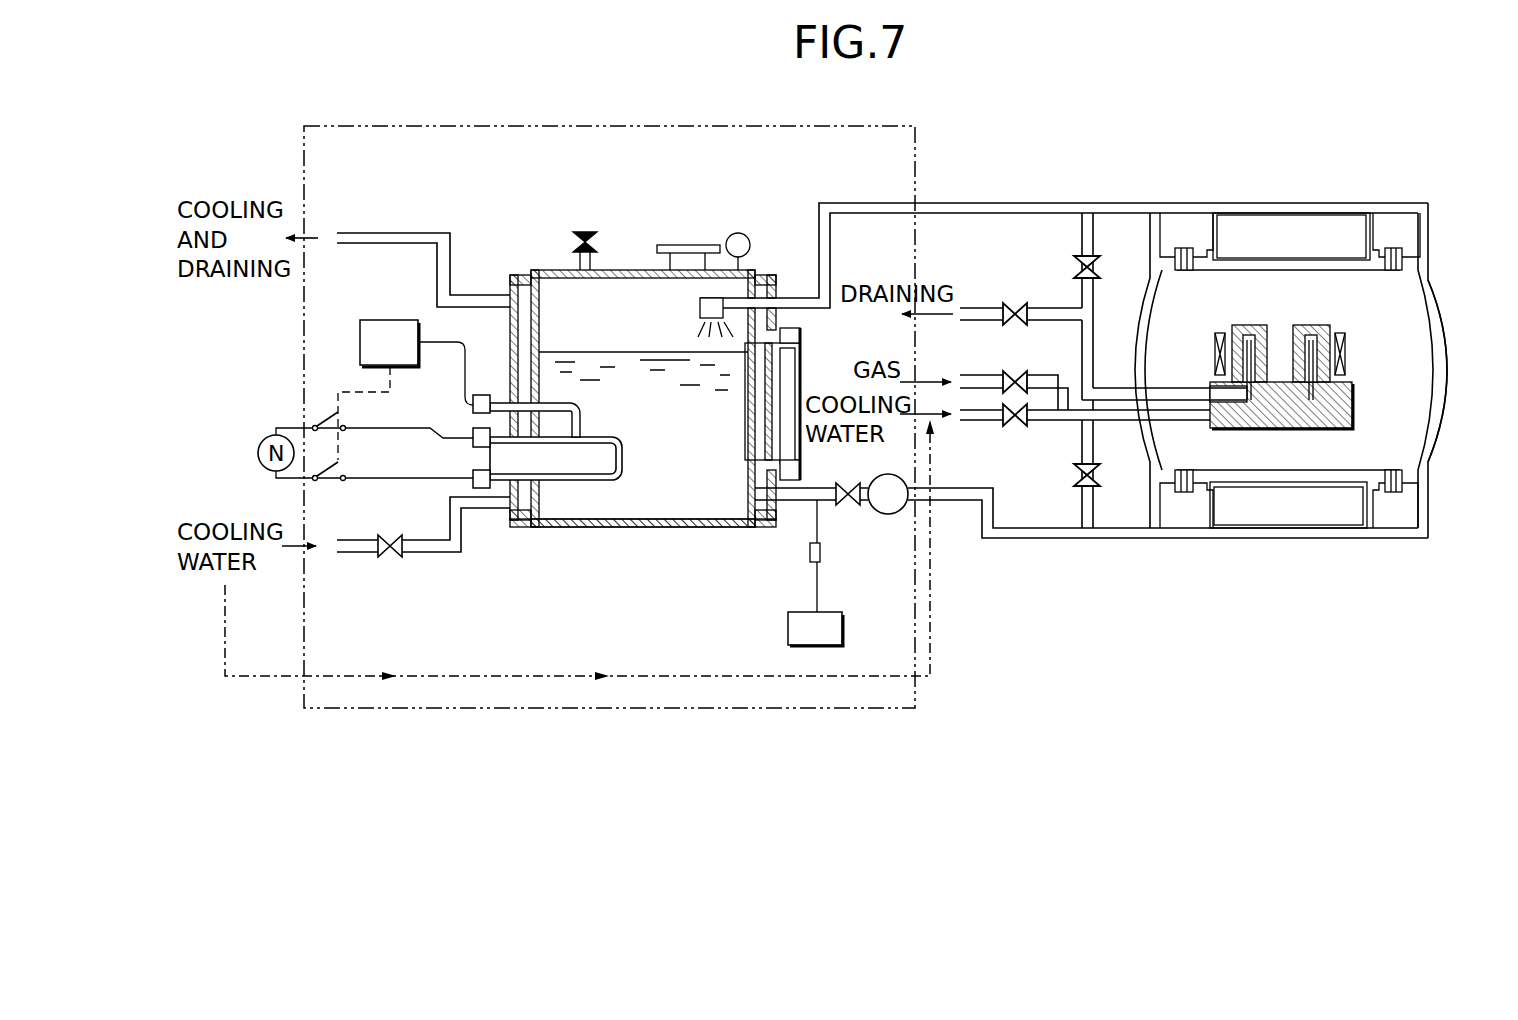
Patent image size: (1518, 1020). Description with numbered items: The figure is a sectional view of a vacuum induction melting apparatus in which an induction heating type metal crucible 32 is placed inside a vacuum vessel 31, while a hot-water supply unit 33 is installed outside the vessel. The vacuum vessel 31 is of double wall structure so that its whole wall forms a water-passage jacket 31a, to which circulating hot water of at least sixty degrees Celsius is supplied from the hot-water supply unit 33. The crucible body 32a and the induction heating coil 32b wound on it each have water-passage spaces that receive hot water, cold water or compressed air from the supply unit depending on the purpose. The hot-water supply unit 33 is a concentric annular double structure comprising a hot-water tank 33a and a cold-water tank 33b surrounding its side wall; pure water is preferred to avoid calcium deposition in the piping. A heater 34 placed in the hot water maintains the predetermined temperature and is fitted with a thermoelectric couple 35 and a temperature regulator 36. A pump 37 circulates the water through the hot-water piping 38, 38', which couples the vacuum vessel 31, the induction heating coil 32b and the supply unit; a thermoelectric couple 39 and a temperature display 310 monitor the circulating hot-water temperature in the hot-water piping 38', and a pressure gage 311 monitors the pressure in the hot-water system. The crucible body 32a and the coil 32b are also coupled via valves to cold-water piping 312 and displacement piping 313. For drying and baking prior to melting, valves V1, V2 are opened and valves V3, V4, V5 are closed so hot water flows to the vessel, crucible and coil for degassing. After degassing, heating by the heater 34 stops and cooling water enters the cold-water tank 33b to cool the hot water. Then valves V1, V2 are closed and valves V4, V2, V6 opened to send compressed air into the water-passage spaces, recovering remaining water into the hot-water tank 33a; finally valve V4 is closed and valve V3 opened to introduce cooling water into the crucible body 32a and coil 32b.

The vacuum vessel 31 is at (1452, 364).
The water-passage jacket 31a is at (1431, 452).
The induction heating type metal crucible 32 is at (1314, 349).
The crucible body 32a is at (1313, 325).
The induction heating coil 32b is at (1215, 347).
The hot-water supply unit 33 is at (678, 708).
The hot-water tank 33a is at (536, 268).
The cold-water tank 33b is at (772, 275).
The heater 34 is at (580, 481).
The thermoelectric couple 35 is at (582, 403).
The temperature regulator 36 is at (384, 320).
The pump 37 is at (885, 514).
The hot-water piping 38 is at (1063, 246).
The hot-water piping 38' is at (1168, 539).
The thermoelectric couple 39 is at (827, 566).
The temperature display 310 is at (823, 645).
The pressure gage 311 is at (738, 232).
The cold-water piping 312 is at (975, 423).
The displacement piping 313 is at (977, 375).
The valve V1 is at (1099, 476).
The valve V2 is at (1100, 262).
The valve V3 is at (1016, 427).
The valve V4 is at (1015, 370).
The valve V5 is at (1015, 302).
The valve V6 is at (584, 236).